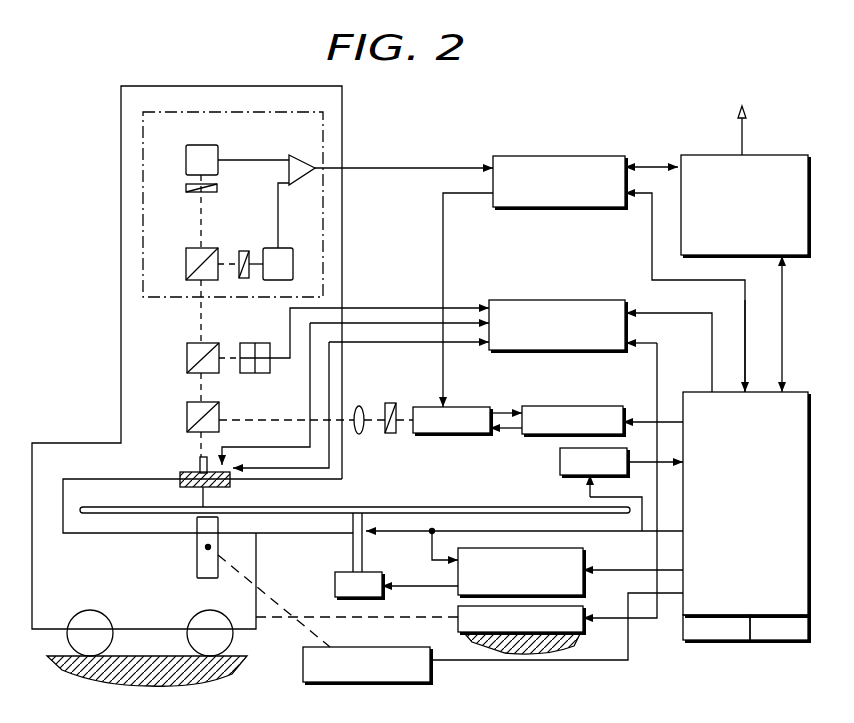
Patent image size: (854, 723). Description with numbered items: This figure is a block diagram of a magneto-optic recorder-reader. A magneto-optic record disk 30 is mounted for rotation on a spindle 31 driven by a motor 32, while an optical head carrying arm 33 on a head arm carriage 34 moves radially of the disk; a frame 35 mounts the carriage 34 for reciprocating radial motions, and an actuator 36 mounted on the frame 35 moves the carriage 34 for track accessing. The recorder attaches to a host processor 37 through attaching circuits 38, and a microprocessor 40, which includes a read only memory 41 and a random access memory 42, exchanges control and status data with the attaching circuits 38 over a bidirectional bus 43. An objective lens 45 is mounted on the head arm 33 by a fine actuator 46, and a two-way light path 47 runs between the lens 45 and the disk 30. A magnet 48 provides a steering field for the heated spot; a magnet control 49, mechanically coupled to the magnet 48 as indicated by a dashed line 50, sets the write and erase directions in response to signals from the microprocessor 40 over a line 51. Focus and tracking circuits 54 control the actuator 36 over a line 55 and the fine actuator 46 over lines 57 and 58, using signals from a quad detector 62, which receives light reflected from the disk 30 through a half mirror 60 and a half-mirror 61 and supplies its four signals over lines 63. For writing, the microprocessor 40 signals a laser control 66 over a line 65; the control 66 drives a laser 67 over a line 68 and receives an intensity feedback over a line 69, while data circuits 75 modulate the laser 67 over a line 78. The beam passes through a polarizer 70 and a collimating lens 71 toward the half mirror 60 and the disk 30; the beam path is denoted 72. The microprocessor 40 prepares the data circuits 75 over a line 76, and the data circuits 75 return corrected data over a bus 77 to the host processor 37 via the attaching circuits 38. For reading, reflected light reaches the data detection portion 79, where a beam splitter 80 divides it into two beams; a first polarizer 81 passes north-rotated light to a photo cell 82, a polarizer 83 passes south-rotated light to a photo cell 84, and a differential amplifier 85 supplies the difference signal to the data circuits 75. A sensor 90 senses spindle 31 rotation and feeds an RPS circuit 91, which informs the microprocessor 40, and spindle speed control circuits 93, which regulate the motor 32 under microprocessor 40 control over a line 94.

The magneto-optic record disk 30 is at (110, 494).
The spindle 31 is at (353, 538).
The motor 32 is at (335, 585).
The optical head carrying arm 33 is at (121, 205).
The head arm carriage 34 is at (242, 640).
The frame 35 is at (162, 644).
The actuator 36 is at (458, 614).
The host processor 37 is at (672, 93).
The attaching circuits 38 is at (766, 155).
The microprocessor 40 is at (698, 392).
The read only memory (ROM) 41 is at (770, 646).
The random access memory (RAM) 42 is at (718, 646).
The bidirectional bus 43 is at (778, 296).
The objective or focussing lens 45 is at (200, 465).
The fine actuator 46 is at (180, 478).
The two-way light path 47 is at (203, 497).
The magnet 48 is at (197, 558).
The magnet control 49 is at (430, 678).
The dashed line 50 is at (280, 594).
The line 51 is at (634, 660).
The focus and tracking circuits 54 is at (600, 298).
The line 55 is at (656, 360).
The line 57 is at (384, 326).
The line 58 is at (460, 346).
The half mirror 60 is at (187, 415).
The half-mirror 61 is at (187, 358).
The quad detector 62 is at (268, 374).
The lines 63 is at (378, 310).
The line 65 is at (654, 416).
The laser control 66 is at (554, 406).
The laser 67 is at (426, 406).
The line 68 is at (506, 436).
The line 69 is at (500, 410).
The polarizer 70 is at (392, 434).
The collimating lens 71 is at (361, 434).
The laser beam path 72 is at (243, 422).
The data circuits 75 is at (578, 156).
The line 76 is at (650, 214).
The bus 77 is at (656, 164).
The line 78 is at (443, 234).
The data detection portion 79 is at (252, 128).
The half-mirror or beam splitter 80 is at (186, 258).
The first polarizer 81 is at (242, 251).
The photo cell 82 is at (283, 248).
The polarizer 83 is at (190, 194).
The photo cell 84 is at (186, 162).
The differential amplifier 85 is at (303, 130).
The tachometer or emitter sensor 90 is at (384, 534).
The RPS circuit 91 is at (560, 458).
The spindle speed control circuits 93 is at (576, 546).
The line 94 is at (632, 574).